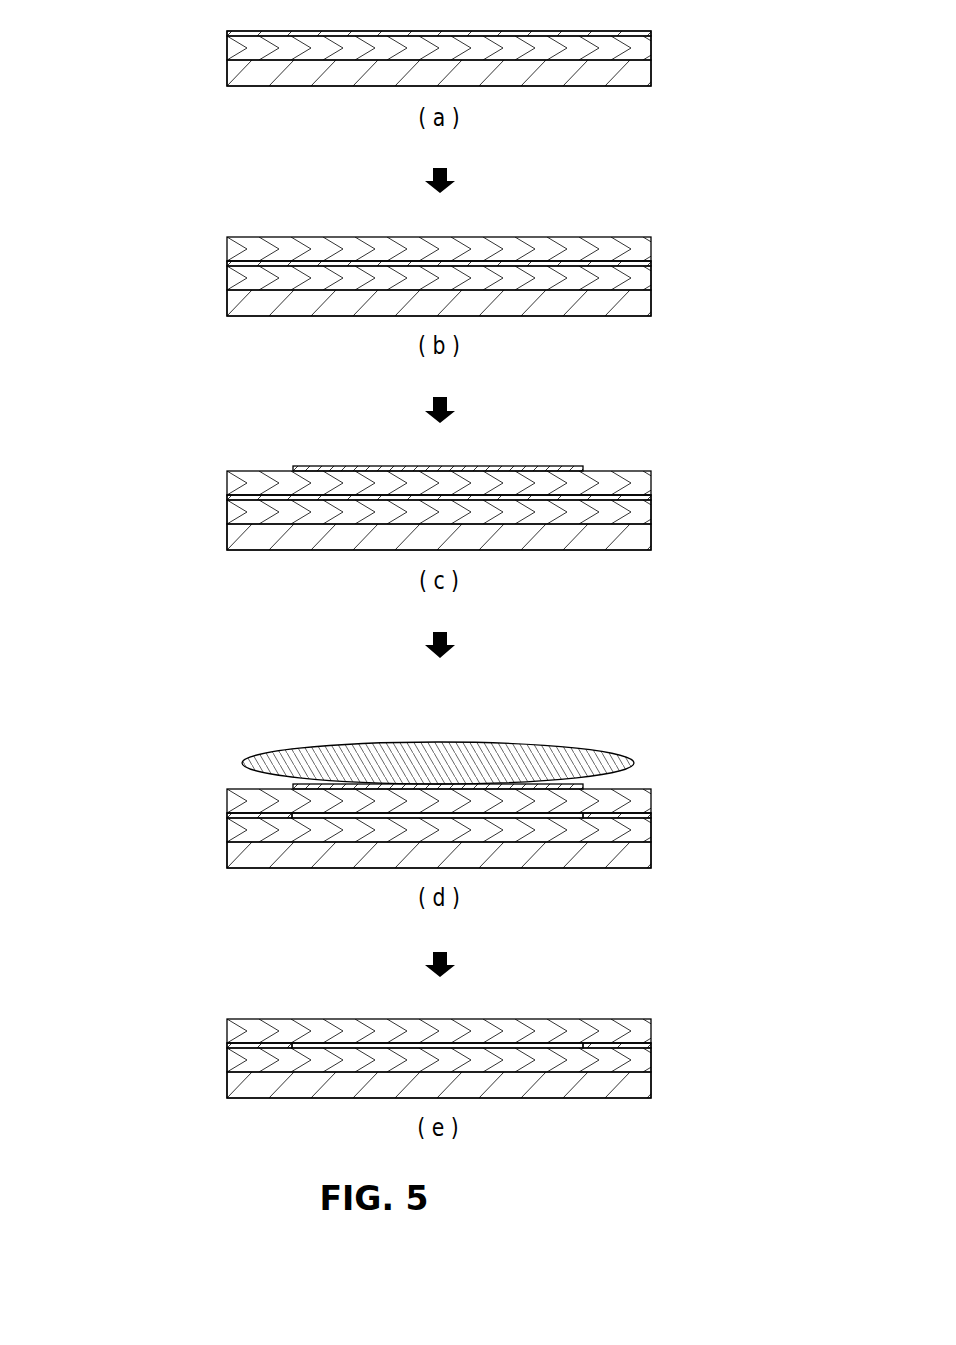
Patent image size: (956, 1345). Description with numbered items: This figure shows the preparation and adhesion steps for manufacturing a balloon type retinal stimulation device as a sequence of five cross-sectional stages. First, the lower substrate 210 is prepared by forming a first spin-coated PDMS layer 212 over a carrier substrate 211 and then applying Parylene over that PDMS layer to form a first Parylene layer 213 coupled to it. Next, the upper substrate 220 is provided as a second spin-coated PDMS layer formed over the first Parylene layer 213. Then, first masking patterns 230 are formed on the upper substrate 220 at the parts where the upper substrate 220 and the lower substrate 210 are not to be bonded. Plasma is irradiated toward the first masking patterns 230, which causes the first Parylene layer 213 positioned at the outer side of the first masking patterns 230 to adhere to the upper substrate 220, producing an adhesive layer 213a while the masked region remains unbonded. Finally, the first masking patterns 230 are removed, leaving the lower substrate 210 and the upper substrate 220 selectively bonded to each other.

The lower substrate 210 is at (142, 123).
The carrier substrate 211 is at (228, 66).
The first spin-coated PDMS layer 212 is at (228, 42).
The first Parylene layer 213 is at (228, 26).
The adhesive layer 213a is at (395, 926).
The upper substrate 220 is at (397, 628).
The first masking patterns 230 is at (440, 594).